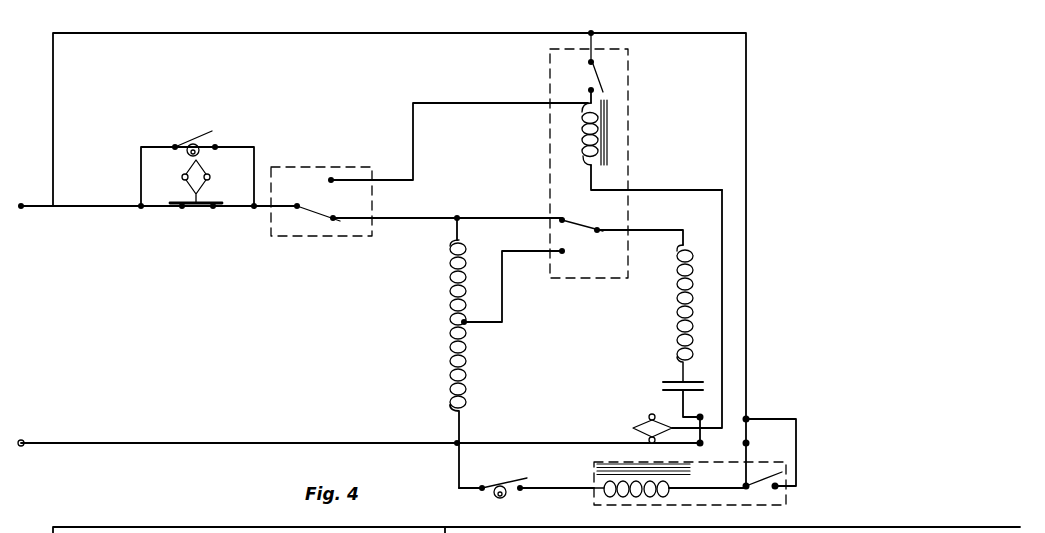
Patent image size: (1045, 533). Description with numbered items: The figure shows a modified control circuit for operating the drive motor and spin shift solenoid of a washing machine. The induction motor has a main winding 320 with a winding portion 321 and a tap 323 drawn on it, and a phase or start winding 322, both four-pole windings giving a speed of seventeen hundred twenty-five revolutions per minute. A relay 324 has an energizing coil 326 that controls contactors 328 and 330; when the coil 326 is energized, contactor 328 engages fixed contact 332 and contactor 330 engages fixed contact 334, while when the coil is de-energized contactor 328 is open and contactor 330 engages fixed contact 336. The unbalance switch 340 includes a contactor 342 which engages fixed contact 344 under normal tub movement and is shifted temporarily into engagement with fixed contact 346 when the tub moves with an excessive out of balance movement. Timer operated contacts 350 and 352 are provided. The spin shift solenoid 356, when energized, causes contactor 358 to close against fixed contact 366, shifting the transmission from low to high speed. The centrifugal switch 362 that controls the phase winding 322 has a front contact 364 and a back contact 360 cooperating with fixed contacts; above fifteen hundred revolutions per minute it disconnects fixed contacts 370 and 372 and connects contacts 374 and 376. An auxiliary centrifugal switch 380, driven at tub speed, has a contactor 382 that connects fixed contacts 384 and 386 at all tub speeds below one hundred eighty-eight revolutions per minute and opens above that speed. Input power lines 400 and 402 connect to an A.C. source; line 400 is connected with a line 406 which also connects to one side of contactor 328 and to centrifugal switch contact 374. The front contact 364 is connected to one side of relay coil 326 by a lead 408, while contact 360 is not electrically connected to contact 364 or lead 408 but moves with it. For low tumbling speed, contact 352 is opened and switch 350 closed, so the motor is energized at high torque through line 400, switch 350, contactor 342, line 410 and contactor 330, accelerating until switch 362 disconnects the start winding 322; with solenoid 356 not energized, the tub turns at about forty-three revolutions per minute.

The main winding 320 is at (466, 354).
The winding portion 321 is at (465, 322).
The phase or start winding 322 is at (682, 312).
The tap 323 is at (504, 308).
The relay 324 is at (616, 107).
The energizing coil 326 is at (598, 134).
The contactor 328 is at (598, 76).
The contactor 330 is at (583, 233).
The fixed contact 332 is at (590, 88).
The fixed contact 334 is at (563, 253).
The fixed contact 336 is at (578, 222).
The unbalance switch 340 is at (288, 178).
The contactor 342 is at (312, 212).
The fixed contact 344 is at (333, 222).
The fixed contact 346 is at (332, 180).
The timer operated contact 350 is at (212, 133).
The timer operated contact 352 is at (524, 485).
The spin shift solenoid 356 is at (630, 480).
The contactor 358 is at (764, 483).
The back contact 360 is at (752, 418).
The centrifugal switch 362 is at (725, 420).
The front contact 364 is at (702, 417).
The fixed contact 366 is at (795, 460).
The fixed contact 370 is at (696, 417).
The fixed contact 372 is at (700, 446).
The centrifugal switch contact 374 is at (743, 418).
The contact 376 is at (745, 444).
The auxiliary centrifugal switch 380 is at (301, 144).
The contactor 382 is at (205, 210).
The fixed contact 384 is at (180, 207).
The fixed contact 386 is at (214, 209).
The input power line 400 is at (88, 206).
The input power line 402 is at (90, 443).
The line 406 is at (365, 33).
The lead 408 is at (724, 250).
The line 410 is at (424, 219).